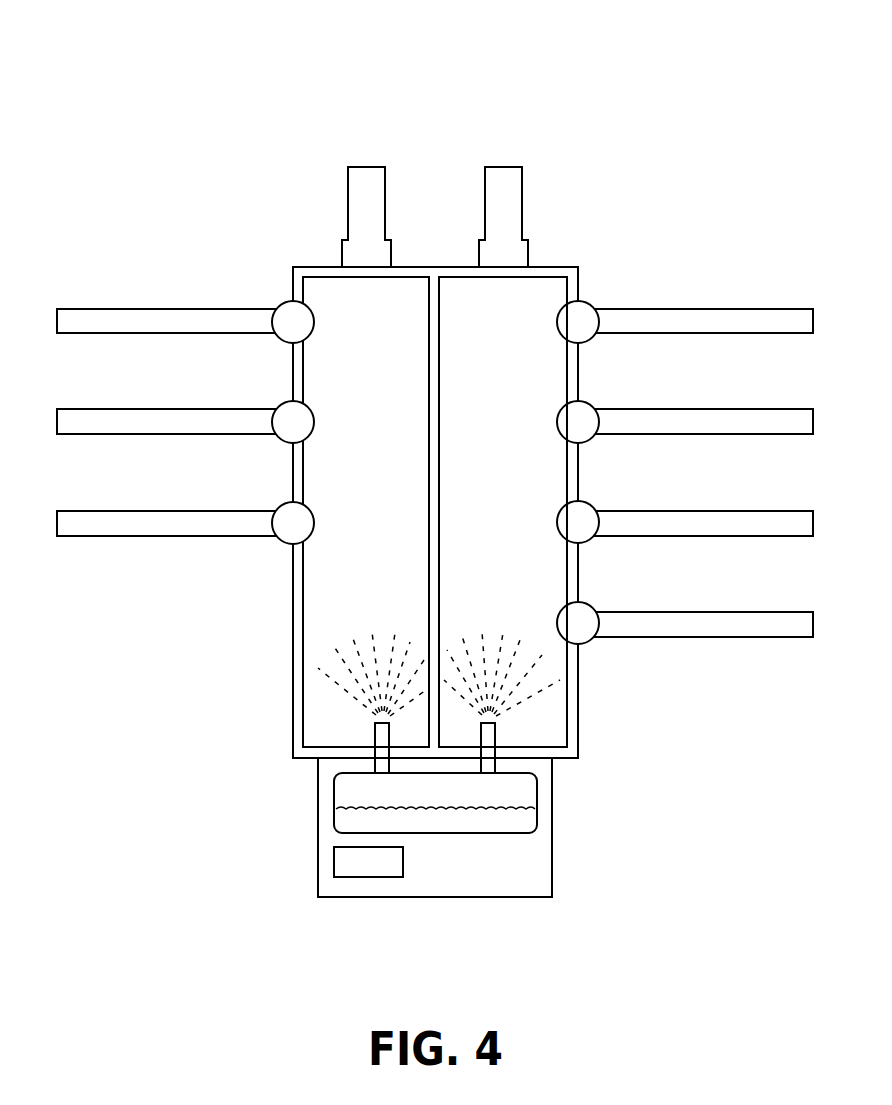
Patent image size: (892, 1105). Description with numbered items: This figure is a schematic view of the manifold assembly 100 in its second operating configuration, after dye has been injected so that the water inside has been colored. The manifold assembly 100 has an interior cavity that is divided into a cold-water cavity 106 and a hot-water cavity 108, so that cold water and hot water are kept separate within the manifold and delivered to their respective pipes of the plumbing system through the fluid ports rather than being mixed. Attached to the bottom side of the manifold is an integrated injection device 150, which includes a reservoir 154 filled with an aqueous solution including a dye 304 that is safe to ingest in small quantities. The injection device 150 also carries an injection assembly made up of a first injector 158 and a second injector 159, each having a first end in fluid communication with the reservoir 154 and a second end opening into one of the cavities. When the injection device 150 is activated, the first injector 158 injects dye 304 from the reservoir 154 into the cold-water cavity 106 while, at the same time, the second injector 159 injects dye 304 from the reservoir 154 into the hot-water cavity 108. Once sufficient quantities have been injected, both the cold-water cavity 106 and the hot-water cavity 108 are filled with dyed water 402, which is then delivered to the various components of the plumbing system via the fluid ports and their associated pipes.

The manifold assembly 100 is at (306, 92).
The dyed water 402 is at (541, 460).
The hot-water cavity 108 is at (328, 717).
The cold-water cavity 106 is at (542, 717).
The second injector 159 is at (373, 733).
The first injector 158 is at (496, 735).
The reservoir 154 is at (334, 800).
The dye 304 is at (523, 822).
The injection device 150 is at (552, 868).